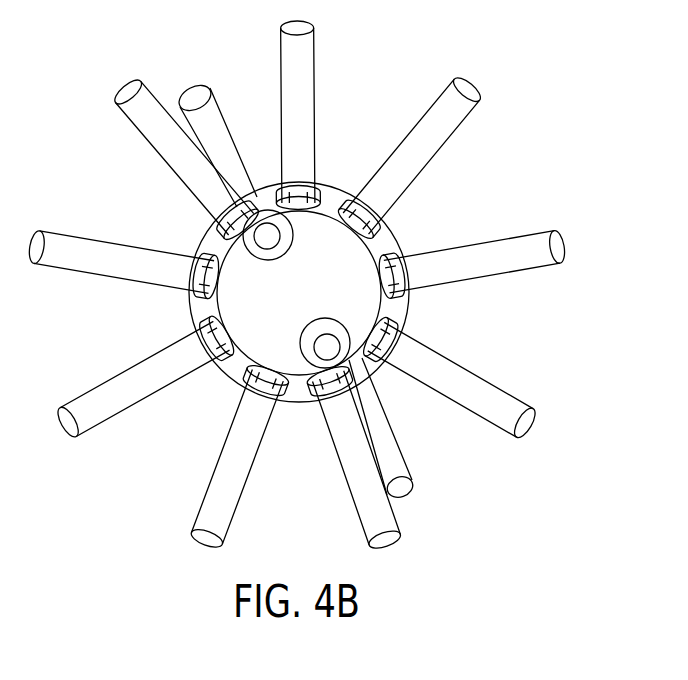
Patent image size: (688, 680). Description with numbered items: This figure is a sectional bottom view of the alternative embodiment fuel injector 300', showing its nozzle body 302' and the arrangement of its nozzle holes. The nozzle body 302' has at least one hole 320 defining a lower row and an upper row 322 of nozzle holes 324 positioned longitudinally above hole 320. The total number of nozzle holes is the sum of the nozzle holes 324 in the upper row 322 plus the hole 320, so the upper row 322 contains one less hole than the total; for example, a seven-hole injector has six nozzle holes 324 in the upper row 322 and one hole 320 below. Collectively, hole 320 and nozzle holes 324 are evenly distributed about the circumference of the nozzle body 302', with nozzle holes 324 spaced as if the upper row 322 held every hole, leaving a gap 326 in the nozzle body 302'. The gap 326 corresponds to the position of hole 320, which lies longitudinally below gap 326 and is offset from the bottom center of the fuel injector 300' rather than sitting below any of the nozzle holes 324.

The fuel injector 300' is at (317, 286).
The nozzle body 302' is at (273, 324).
The hole 320 is at (270, 215).
The upper row 322 is at (219, 374).
The nozzle holes 324 is at (386, 212).
The gap 326 is at (368, 376).